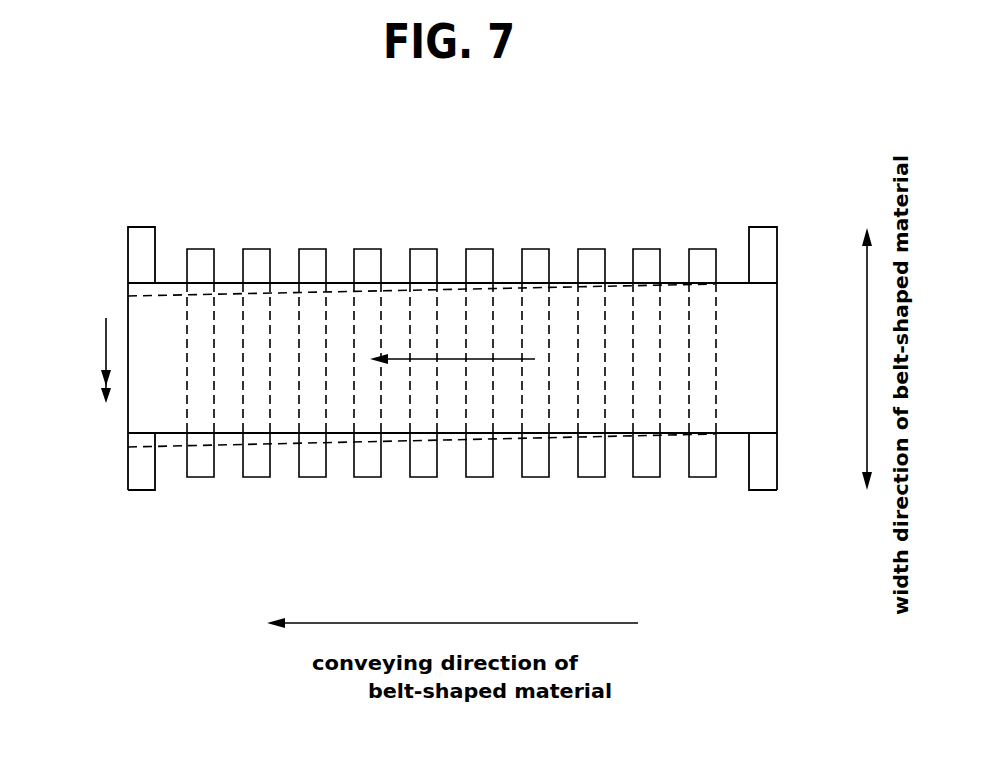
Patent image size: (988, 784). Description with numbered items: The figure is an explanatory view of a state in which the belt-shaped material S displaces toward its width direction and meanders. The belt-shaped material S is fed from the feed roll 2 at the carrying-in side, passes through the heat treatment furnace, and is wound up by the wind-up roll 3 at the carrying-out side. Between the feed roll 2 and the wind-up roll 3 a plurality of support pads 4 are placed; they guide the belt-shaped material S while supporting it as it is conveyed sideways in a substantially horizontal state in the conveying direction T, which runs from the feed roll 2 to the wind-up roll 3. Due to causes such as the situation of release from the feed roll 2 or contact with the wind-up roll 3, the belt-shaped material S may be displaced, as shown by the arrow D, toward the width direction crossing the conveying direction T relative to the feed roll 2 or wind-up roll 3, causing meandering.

The feed roll 2 is at (763, 483).
The wind-up roll 3 is at (141, 481).
The support pads 4 is at (310, 249).
The belt-shaped material S is at (394, 283).
The conveying direction T is at (450, 357).
The arrow indicating width-direction displacement D is at (105, 338).